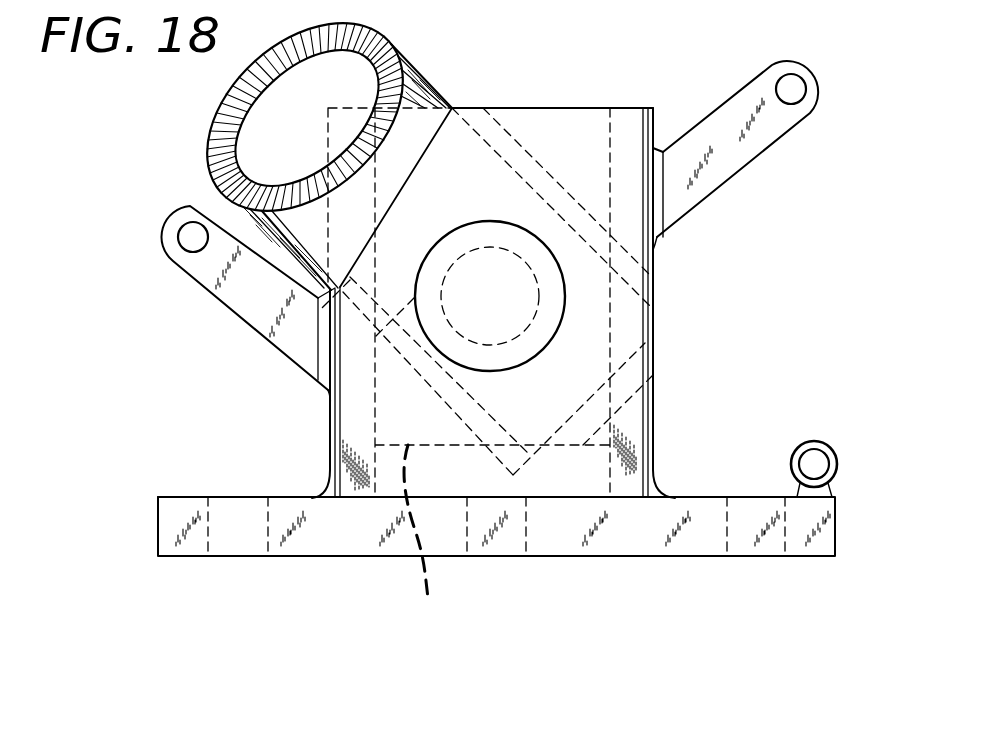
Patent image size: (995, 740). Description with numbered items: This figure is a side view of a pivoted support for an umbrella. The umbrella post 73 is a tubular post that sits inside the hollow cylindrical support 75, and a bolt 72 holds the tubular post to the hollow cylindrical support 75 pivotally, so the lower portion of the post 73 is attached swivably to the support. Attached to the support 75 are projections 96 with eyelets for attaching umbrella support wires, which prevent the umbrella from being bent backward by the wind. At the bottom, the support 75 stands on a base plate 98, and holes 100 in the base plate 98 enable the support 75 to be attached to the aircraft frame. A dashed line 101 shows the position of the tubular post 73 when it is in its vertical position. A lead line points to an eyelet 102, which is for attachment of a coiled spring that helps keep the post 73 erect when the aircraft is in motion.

The bolt 72 is at (567, 312).
The umbrella post 73 is at (430, 88).
The hollow cylindrical support 75 is at (658, 402).
The projections 96 is at (248, 323).
The base plate 98 is at (180, 497).
The holes 100 is at (497, 557).
The dashed line 101 is at (421, 540).
The eyelet 102 is at (829, 445).